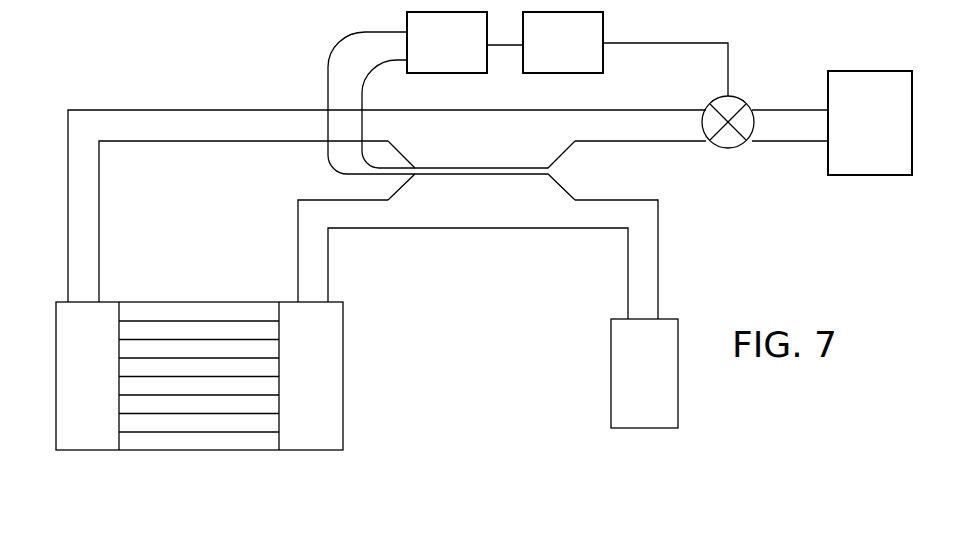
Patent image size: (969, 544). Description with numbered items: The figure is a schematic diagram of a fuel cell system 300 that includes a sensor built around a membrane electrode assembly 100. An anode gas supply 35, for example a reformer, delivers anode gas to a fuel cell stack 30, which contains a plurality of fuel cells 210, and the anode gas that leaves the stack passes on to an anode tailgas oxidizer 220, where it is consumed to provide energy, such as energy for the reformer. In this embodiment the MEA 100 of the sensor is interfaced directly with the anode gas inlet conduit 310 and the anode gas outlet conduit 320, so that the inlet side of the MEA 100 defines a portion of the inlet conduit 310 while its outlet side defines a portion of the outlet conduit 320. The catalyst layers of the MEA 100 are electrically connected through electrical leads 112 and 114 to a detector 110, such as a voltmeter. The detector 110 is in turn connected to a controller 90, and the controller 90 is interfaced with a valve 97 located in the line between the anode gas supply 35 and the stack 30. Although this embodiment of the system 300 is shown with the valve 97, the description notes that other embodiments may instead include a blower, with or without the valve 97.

The fuel cell stack 30 is at (219, 358).
The anode gas supply 35 is at (887, 129).
The controller 90 is at (575, 57).
The valve 97 is at (737, 99).
The membrane electrode assembly 100 is at (549, 171).
The detector 110 is at (463, 57).
The electrical lead 112 is at (328, 67).
The electrical lead 114 is at (376, 69).
The fuel cells 210 is at (201, 314).
The anode tailgas oxidizer 220 is at (667, 377).
The fuel cell system 300 is at (387, 214).
The anode gas inlet conduit 310 is at (277, 125).
The anode gas outlet conduit 320 is at (362, 218).